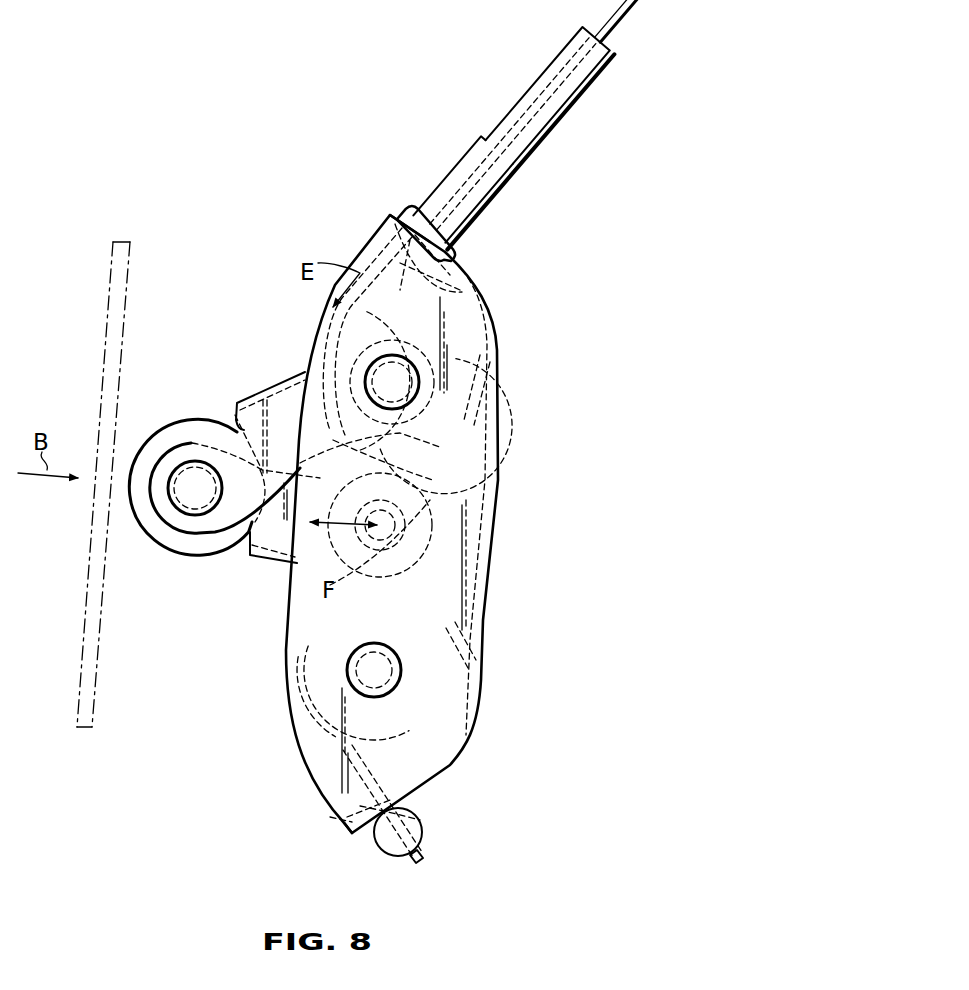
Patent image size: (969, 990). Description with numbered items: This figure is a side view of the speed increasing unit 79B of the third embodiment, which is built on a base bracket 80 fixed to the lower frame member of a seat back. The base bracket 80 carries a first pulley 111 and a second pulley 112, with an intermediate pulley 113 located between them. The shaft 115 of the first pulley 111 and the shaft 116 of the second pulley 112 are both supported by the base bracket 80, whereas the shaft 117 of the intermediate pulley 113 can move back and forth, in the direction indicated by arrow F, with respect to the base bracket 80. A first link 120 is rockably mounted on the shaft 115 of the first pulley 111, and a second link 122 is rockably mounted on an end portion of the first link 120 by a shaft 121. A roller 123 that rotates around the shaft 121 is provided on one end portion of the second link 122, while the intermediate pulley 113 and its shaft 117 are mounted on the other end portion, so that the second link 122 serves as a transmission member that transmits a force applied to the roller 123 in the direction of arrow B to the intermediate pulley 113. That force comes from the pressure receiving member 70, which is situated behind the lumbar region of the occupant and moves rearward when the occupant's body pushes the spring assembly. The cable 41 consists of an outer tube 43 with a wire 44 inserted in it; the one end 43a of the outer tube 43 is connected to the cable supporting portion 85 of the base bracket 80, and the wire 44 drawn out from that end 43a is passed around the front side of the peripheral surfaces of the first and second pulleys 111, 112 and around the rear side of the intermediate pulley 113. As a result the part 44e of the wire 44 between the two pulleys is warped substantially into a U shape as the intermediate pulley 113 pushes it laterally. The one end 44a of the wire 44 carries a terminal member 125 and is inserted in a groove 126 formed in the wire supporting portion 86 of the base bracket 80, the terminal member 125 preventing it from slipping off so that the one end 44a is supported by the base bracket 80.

The speed increasing unit 79B is at (318, 125).
The cable 41 is at (538, 73).
The outer tube 43 is at (558, 97).
The one end of the outer tube 43a is at (452, 256).
The wire 44 is at (460, 283).
The one end of the wire 44a is at (420, 821).
The part of the wire 44e is at (468, 596).
The pressure receiving member 70 is at (80, 690).
The base bracket 80 is at (497, 447).
The cable supporting portion 85 is at (392, 212).
The wire supporting portion 86 is at (361, 838).
The first pulley 111 is at (492, 338).
The second pulley 112 is at (470, 683).
The intermediate pulley 113 is at (450, 525).
The shaft of the first pulley 115 is at (395, 383).
The shaft of the second pulley 116 is at (380, 674).
The shaft of the intermediate pulley 117 is at (405, 553).
The first link 120 is at (270, 410).
The shaft 121 is at (196, 485).
The second link 122 is at (265, 548).
The roller 123 is at (152, 445).
The terminal member 125 is at (428, 848).
The groove 126 is at (335, 820).